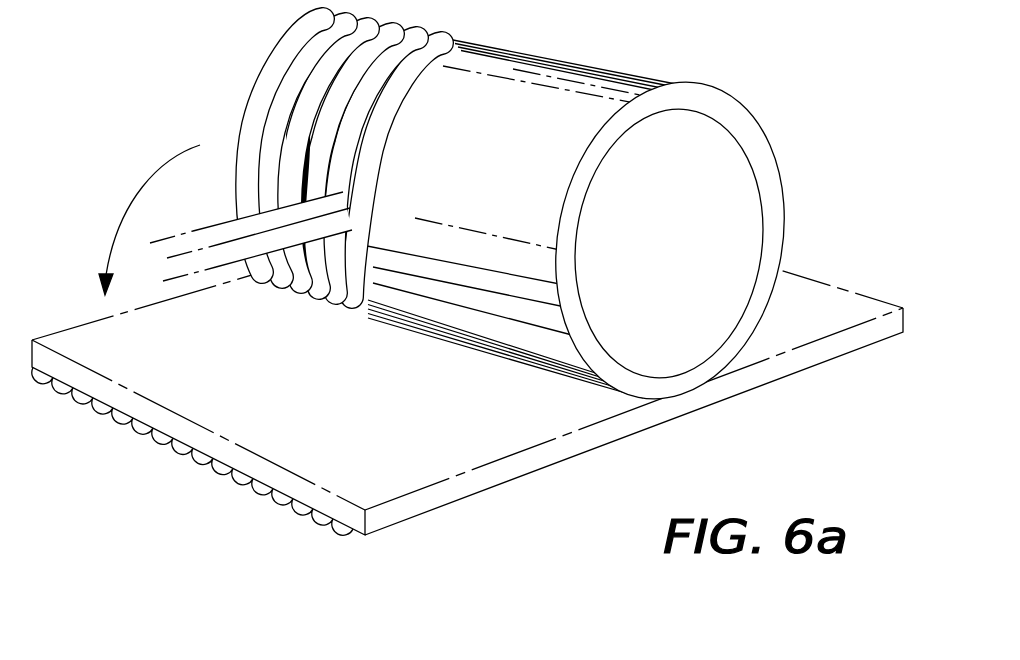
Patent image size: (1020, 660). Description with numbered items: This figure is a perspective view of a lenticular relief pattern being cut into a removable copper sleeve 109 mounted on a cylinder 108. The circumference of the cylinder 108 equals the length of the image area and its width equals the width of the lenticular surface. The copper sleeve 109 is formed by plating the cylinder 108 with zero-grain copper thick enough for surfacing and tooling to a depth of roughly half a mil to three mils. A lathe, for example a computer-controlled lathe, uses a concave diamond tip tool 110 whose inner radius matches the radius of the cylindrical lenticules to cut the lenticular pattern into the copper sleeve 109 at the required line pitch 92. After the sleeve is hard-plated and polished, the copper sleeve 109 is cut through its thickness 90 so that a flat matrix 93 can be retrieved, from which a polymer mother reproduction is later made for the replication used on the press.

The thickness 90 is at (696, 86).
The line pitch 92 is at (175, 450).
The flat matrix 93 is at (813, 303).
The cylinder 108 is at (737, 200).
The copper sleeve 109 is at (758, 118).
The concave diamond tip tool 110 is at (323, 224).